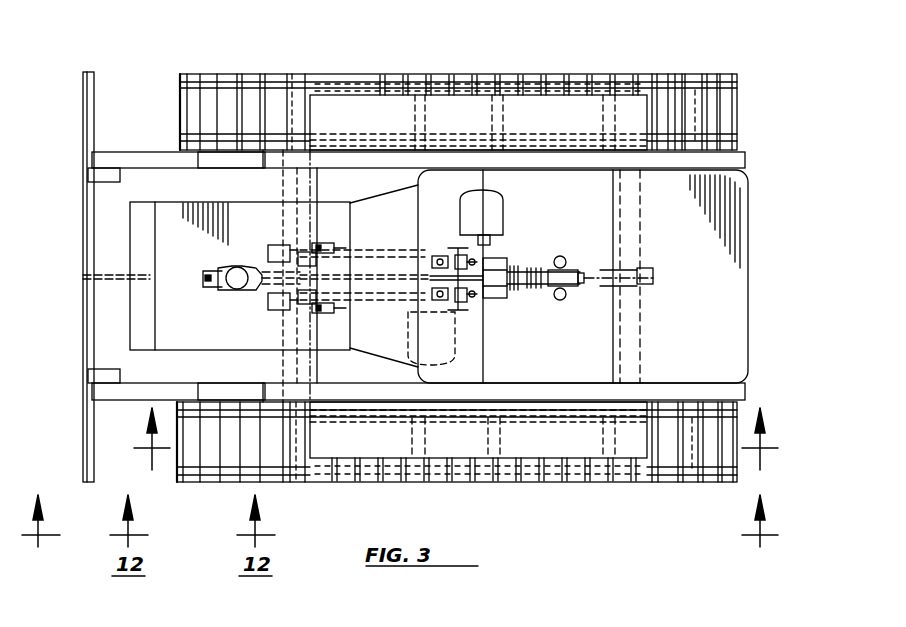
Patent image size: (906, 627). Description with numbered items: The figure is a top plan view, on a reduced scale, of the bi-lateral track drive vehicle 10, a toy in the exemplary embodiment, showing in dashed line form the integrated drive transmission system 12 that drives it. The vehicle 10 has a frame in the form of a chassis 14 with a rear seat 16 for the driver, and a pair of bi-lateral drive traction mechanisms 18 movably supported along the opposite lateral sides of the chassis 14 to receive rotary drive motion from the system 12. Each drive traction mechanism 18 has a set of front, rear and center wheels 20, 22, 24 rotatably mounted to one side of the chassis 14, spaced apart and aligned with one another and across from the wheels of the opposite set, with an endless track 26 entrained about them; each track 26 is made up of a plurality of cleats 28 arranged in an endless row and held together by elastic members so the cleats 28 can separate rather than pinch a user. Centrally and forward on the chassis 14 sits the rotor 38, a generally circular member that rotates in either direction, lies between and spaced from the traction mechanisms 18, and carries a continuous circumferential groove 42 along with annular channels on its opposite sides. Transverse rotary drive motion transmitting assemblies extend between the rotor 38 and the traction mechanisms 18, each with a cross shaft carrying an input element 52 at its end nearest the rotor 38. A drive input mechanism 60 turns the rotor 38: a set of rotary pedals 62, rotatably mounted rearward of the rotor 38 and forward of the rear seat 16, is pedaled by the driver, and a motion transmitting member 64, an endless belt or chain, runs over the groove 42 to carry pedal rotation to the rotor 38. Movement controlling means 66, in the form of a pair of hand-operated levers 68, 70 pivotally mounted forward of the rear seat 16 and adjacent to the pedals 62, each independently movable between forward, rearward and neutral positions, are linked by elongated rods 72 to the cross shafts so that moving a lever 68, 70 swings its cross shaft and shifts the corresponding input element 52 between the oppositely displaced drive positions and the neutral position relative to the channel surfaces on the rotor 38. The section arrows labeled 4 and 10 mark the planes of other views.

The section line 4- 4 is at (48, 576).
The bi-lateral track drive vehicle 10 is at (168, 498).
The integrated drive transmission system 12 is at (325, 230).
The chassis 14 is at (752, 267).
The rear seat 16 is at (697, 335).
The bi-lateral drive traction mechanism 18 is at (760, 110).
The front wheel 20 is at (229, 78).
The rear wheel 22 is at (667, 84).
The center wheel 24 is at (436, 82).
The endless track 26 is at (180, 110).
The cleats 28 is at (298, 80).
The rotor 38 is at (250, 290).
The circumferential groove 42 is at (205, 277).
The input element 52 is at (306, 255).
The drive input mechanism 60 is at (505, 312).
The set of rotary pedals 62 is at (508, 240).
The motion transmitting member 64 is at (385, 262).
The movement controlling means 66 is at (590, 262).
The hand-operated lever 68 is at (560, 300).
The hand-operated lever 70 is at (560, 256).
The elongated rod 72 is at (428, 258).